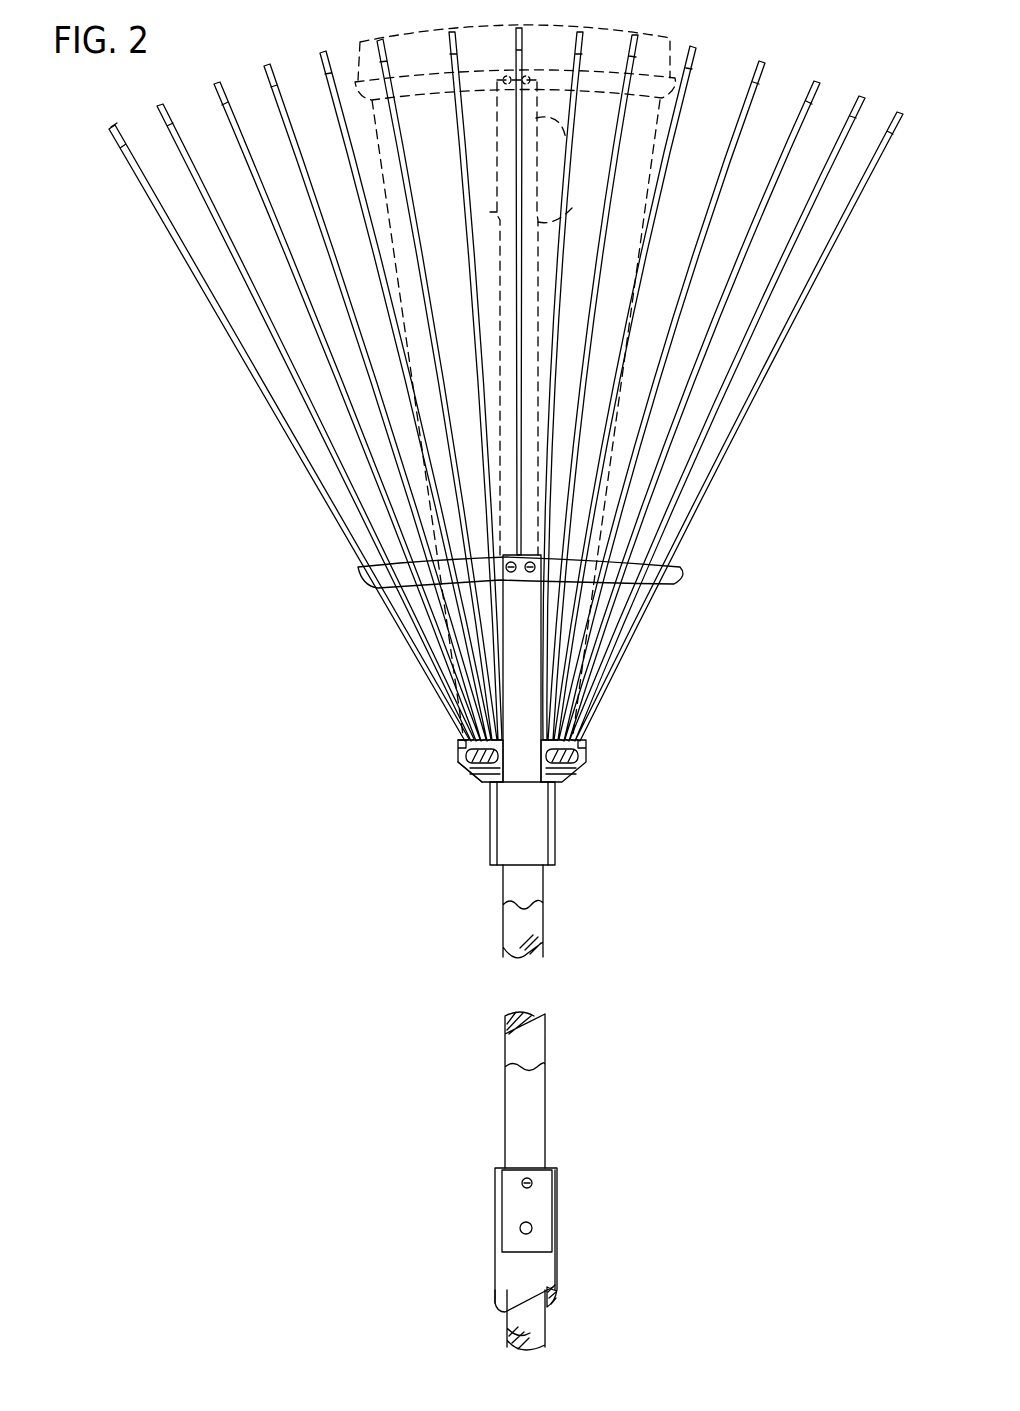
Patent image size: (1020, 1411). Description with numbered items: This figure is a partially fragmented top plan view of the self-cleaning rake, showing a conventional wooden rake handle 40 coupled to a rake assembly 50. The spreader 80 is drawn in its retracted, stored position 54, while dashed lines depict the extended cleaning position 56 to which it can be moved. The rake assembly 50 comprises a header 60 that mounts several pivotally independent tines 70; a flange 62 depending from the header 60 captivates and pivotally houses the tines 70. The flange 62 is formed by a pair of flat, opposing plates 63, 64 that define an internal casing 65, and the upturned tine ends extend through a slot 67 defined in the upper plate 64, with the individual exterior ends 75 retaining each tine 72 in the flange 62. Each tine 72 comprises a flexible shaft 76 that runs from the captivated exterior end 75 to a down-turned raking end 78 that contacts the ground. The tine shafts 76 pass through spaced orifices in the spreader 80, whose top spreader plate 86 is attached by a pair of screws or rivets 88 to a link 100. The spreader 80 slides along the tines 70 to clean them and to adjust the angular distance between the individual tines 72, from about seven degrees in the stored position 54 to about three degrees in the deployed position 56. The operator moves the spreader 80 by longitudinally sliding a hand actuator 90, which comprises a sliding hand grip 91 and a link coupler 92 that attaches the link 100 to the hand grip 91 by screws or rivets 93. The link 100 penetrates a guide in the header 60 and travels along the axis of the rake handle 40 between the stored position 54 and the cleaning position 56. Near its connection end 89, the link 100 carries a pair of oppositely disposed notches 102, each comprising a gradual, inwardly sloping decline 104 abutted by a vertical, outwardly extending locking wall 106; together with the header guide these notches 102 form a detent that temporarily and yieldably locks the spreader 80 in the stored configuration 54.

The rake handle 40 is at (572, 1048).
The rake assembly 50 is at (588, 918).
The stored position 54 is at (682, 622).
The cleaning position 56 is at (680, 30).
The header 60 is at (478, 853).
The flange 62 is at (592, 752).
The plate 63 is at (582, 740).
The upper plate 64 is at (574, 772).
The internal casing 65 is at (580, 757).
The slot 67 is at (456, 741).
The tines 70 is at (160, 260).
The tine 72 is at (137, 168).
The exterior end 75 is at (468, 762).
The flexible shaft 76 is at (232, 338).
The raking end 78 is at (116, 128).
The spreader 80 is at (690, 68).
The top spreader plate 86 is at (662, 572).
The rivets 88 is at (506, 568).
The connection end 89 is at (541, 118).
The hand actuator 90 is at (582, 1250).
The hand grip 91 is at (505, 1288).
The link coupler 92 is at (505, 1222).
The rivets 93 is at (521, 1184).
The link 100 is at (490, 1120).
The notches 102 is at (490, 250).
The inwardly sloping decline 104 is at (500, 228).
The locking wall 106 is at (560, 222).